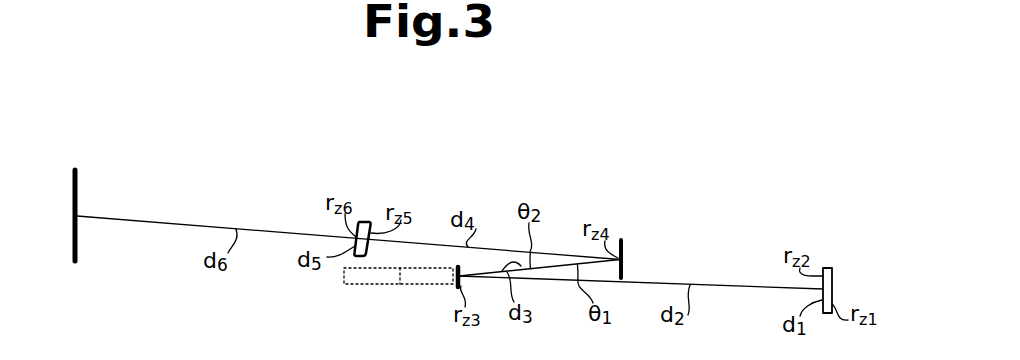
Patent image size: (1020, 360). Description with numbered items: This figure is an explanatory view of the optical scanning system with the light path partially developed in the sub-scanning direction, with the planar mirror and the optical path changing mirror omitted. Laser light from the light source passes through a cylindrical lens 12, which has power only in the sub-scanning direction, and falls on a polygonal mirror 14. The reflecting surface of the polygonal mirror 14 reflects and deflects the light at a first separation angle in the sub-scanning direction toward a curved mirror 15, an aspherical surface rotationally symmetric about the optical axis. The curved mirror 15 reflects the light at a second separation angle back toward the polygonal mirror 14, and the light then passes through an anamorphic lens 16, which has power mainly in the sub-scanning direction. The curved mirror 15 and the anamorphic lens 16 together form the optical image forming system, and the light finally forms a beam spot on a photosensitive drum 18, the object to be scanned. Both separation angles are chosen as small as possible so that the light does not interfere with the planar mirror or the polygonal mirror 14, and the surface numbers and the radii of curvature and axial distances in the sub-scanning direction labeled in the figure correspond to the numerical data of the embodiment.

The cylindrical lens 12 is at (828, 268).
The polygonal mirror 14 is at (400, 285).
The curved mirror 15 is at (623, 265).
The anamorphic lens 16 is at (363, 221).
The photosensitive drum 18 is at (78, 183).